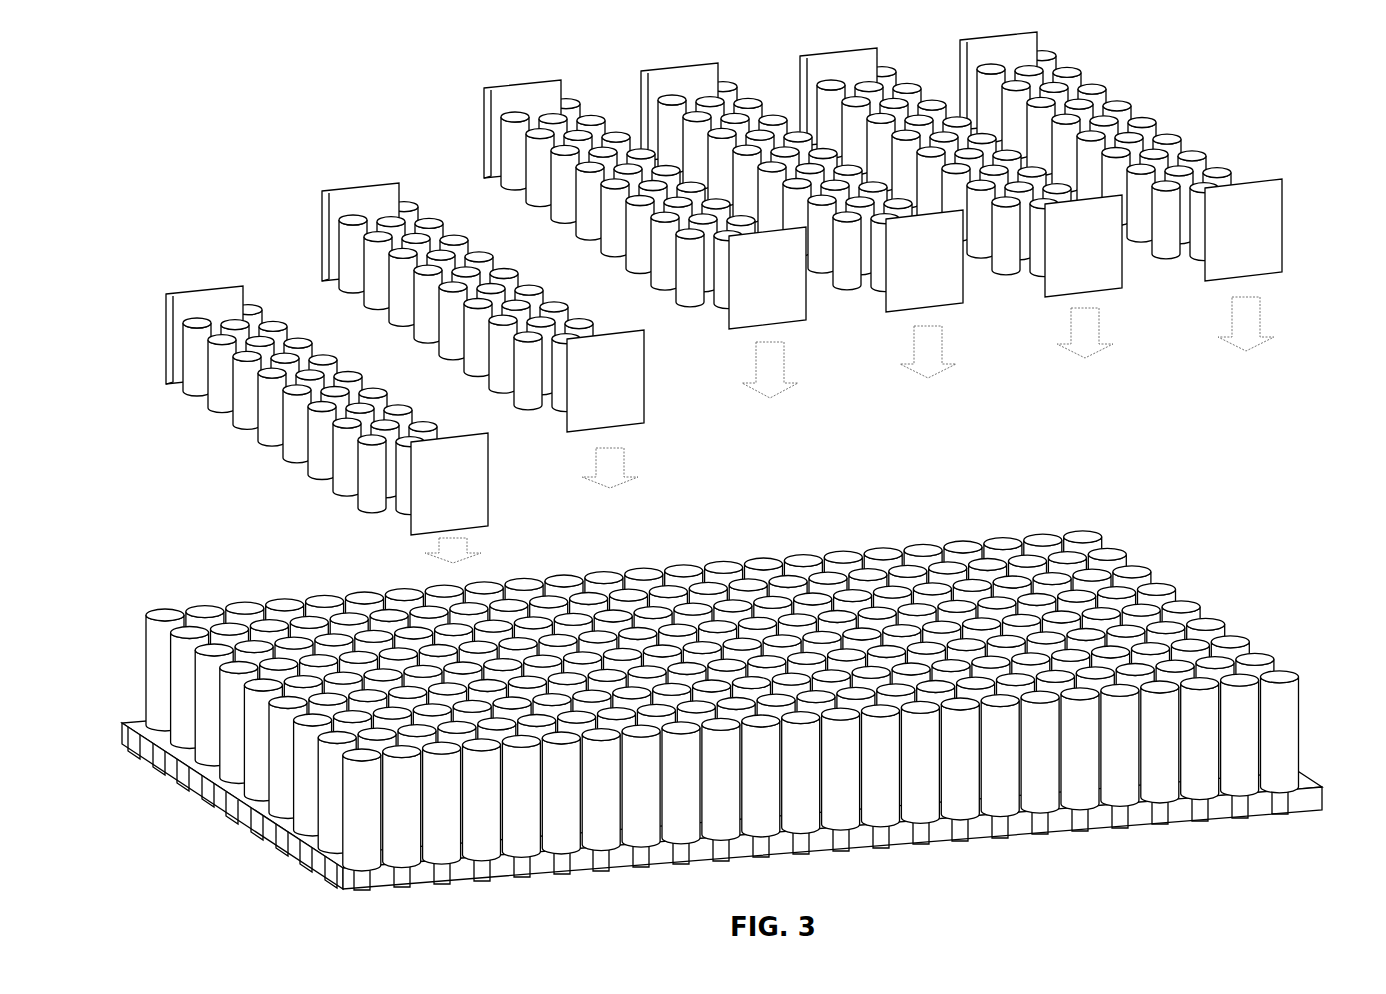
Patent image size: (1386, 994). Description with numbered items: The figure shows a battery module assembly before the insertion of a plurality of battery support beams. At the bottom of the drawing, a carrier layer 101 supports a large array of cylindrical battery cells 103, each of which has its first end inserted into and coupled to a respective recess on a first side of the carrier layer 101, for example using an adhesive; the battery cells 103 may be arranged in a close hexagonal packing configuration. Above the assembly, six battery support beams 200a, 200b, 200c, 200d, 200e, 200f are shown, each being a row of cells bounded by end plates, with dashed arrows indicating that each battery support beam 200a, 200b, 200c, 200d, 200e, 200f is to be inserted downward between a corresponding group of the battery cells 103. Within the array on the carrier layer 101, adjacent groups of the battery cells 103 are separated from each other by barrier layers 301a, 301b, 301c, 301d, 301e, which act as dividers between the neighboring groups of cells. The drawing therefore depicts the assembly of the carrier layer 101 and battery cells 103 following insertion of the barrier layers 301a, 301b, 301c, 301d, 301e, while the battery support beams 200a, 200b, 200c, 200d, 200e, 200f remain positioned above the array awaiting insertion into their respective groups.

The carrier layer 101 is at (1317, 810).
The battery cells 103 is at (764, 696).
The battery support beam 200a is at (213, 289).
The battery support beam 200b is at (372, 186).
The battery support beam 200c is at (523, 84).
The battery support beam 200d is at (684, 67).
The battery support beam 200e is at (840, 52).
The battery support beam 200f is at (1040, 40).
The barrier layer 301a is at (296, 598).
The barrier layer 301b is at (456, 588).
The barrier layer 301c is at (617, 577).
The barrier layer 301d is at (777, 563).
The barrier layer 301e is at (939, 550).